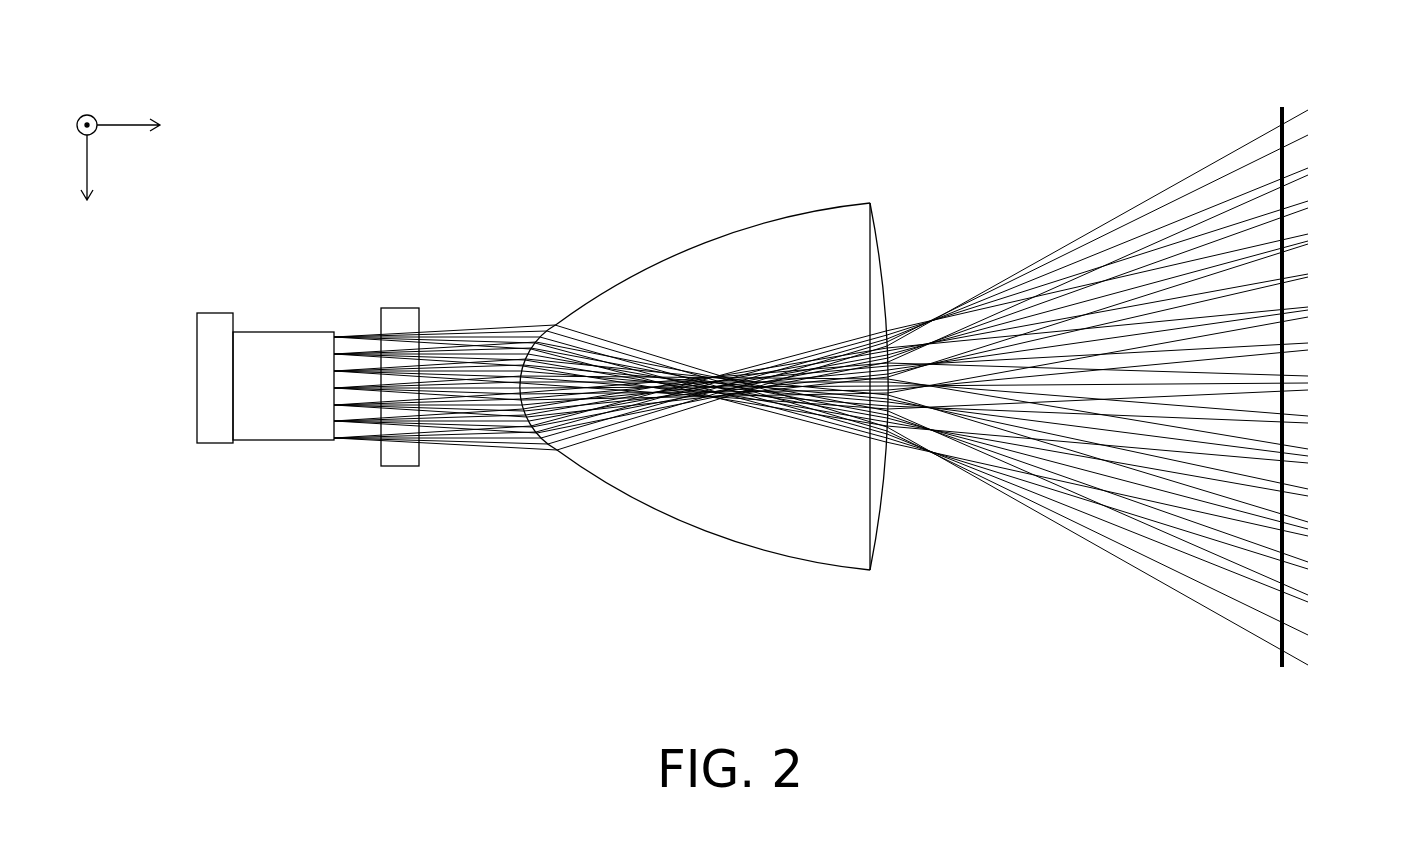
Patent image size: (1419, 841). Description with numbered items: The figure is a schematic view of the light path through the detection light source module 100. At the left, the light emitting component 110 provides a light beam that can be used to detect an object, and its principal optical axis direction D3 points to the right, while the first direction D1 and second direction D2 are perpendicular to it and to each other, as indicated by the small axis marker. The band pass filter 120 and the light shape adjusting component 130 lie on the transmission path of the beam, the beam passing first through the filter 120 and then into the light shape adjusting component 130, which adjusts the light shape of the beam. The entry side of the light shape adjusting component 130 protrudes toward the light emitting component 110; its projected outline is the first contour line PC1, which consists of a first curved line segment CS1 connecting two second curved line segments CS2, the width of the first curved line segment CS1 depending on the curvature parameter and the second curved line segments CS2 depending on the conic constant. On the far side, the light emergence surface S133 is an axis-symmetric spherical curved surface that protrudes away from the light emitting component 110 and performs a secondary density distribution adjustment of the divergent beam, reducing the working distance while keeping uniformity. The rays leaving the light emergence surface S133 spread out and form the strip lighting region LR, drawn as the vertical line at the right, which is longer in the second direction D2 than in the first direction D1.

The detection light source module 100 is at (803, 390).
The light emitting component 110 is at (277, 340).
The band pass filter 120 is at (402, 306).
The light shape adjusting component 130 is at (736, 364).
The first curved line segment CS1 is at (539, 327).
The second curved line segment CS2 is at (615, 271).
The first contour line PC1 is at (610, 203).
The light emergence surface S133 is at (890, 498).
The strip lighting region LR is at (1280, 110).
The first direction D1 is at (76, 110).
The second direction D2 is at (88, 187).
The principal optical axis direction D3 is at (148, 125).